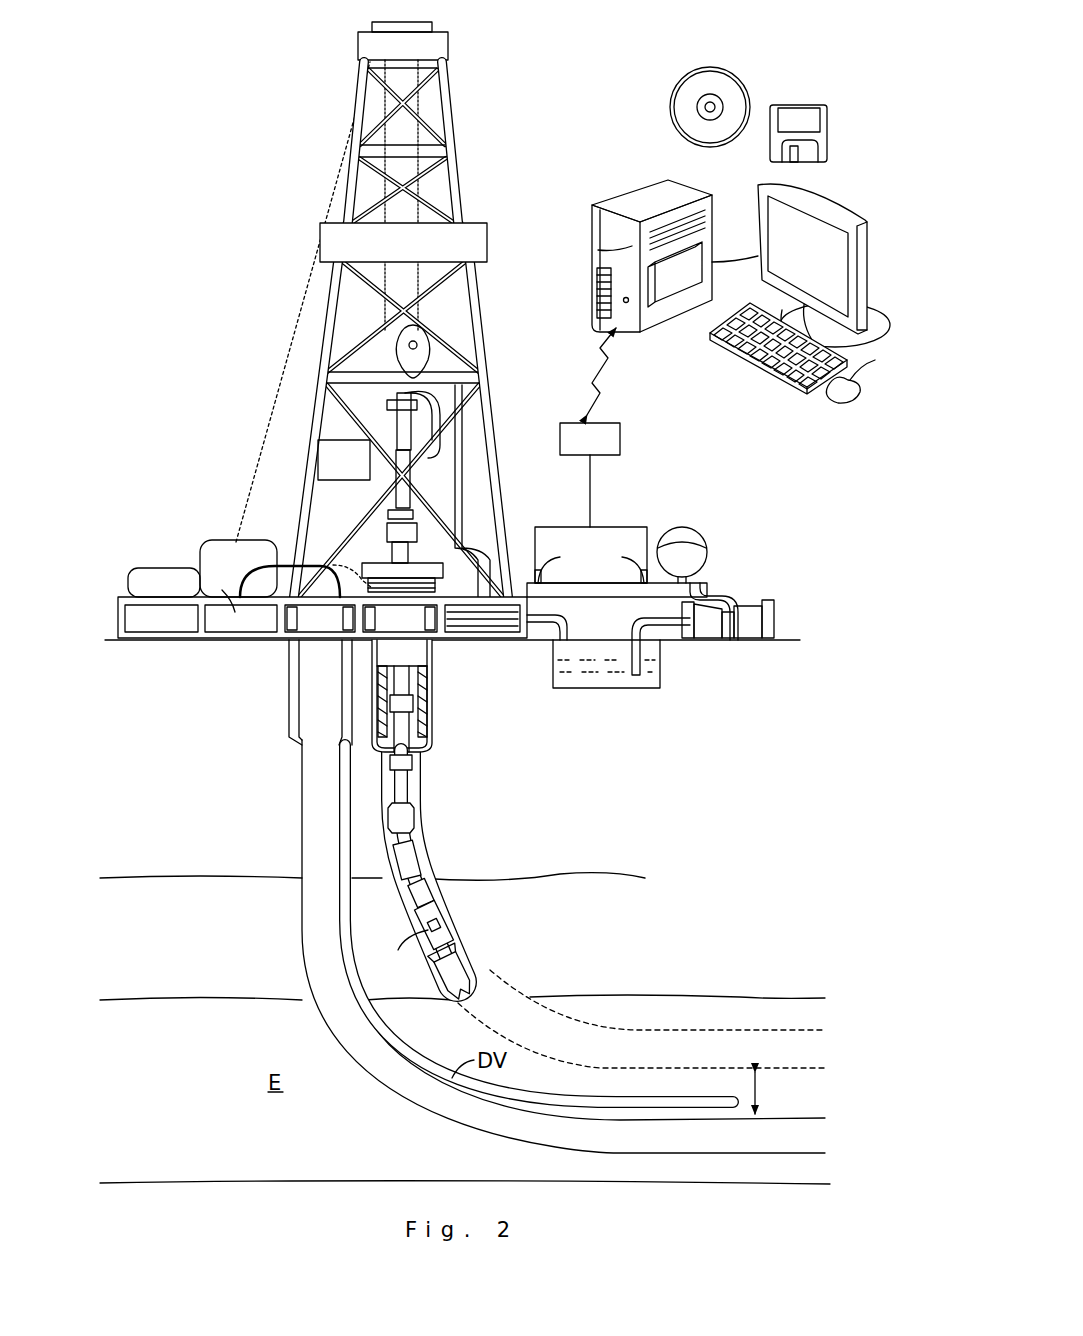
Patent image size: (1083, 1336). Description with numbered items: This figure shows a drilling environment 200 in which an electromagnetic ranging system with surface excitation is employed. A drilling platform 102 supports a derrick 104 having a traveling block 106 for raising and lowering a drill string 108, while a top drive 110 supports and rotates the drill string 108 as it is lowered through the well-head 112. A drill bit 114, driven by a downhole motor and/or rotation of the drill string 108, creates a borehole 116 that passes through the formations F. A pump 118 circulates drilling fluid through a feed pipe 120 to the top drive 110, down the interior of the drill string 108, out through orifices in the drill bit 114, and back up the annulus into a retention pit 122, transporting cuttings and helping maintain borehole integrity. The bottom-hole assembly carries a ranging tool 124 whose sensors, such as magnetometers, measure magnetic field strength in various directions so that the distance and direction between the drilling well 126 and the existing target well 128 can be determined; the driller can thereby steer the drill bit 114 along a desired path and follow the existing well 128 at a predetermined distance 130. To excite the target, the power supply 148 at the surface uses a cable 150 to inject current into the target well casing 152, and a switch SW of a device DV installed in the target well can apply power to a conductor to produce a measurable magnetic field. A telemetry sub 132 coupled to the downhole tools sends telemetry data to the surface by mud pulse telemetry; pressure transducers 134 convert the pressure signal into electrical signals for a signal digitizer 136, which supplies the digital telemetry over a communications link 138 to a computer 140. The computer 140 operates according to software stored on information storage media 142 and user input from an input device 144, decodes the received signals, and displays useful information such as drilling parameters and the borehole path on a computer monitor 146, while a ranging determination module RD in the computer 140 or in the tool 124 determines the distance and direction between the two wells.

The drilling environment 200 is at (220, 166).
The drilling platform 102 is at (118, 615).
The derrick 104 is at (462, 155).
The traveling block 106 is at (425, 352).
The drill string 108 is at (408, 785).
The top drive 110 is at (405, 428).
The well-head 112 is at (380, 560).
The drill bit 114 is at (478, 978).
The borehole 116 is at (428, 850).
The pump 118 is at (745, 600).
The feed pipe 120 is at (655, 597).
The retention pit 122 is at (598, 678).
The ranging tool 124 is at (450, 940).
The drilling well 126 is at (618, 1030).
The target well 128 is at (432, 1120).
The predetermined distance 130 is at (778, 1093).
The telemetry sub 132 is at (448, 906).
The pressure transducers 134 is at (591, 519).
The signal digitizer 136 is at (590, 439).
The communications link 138 is at (619, 371).
The computer 140 is at (678, 316).
The non-transitory information storage media 142 is at (792, 105).
The input device 144 is at (780, 374).
The computer monitor 146 is at (824, 265).
The power supply 148 is at (236, 650).
The cable 150 is at (250, 590).
The target well casing 152 is at (298, 707).